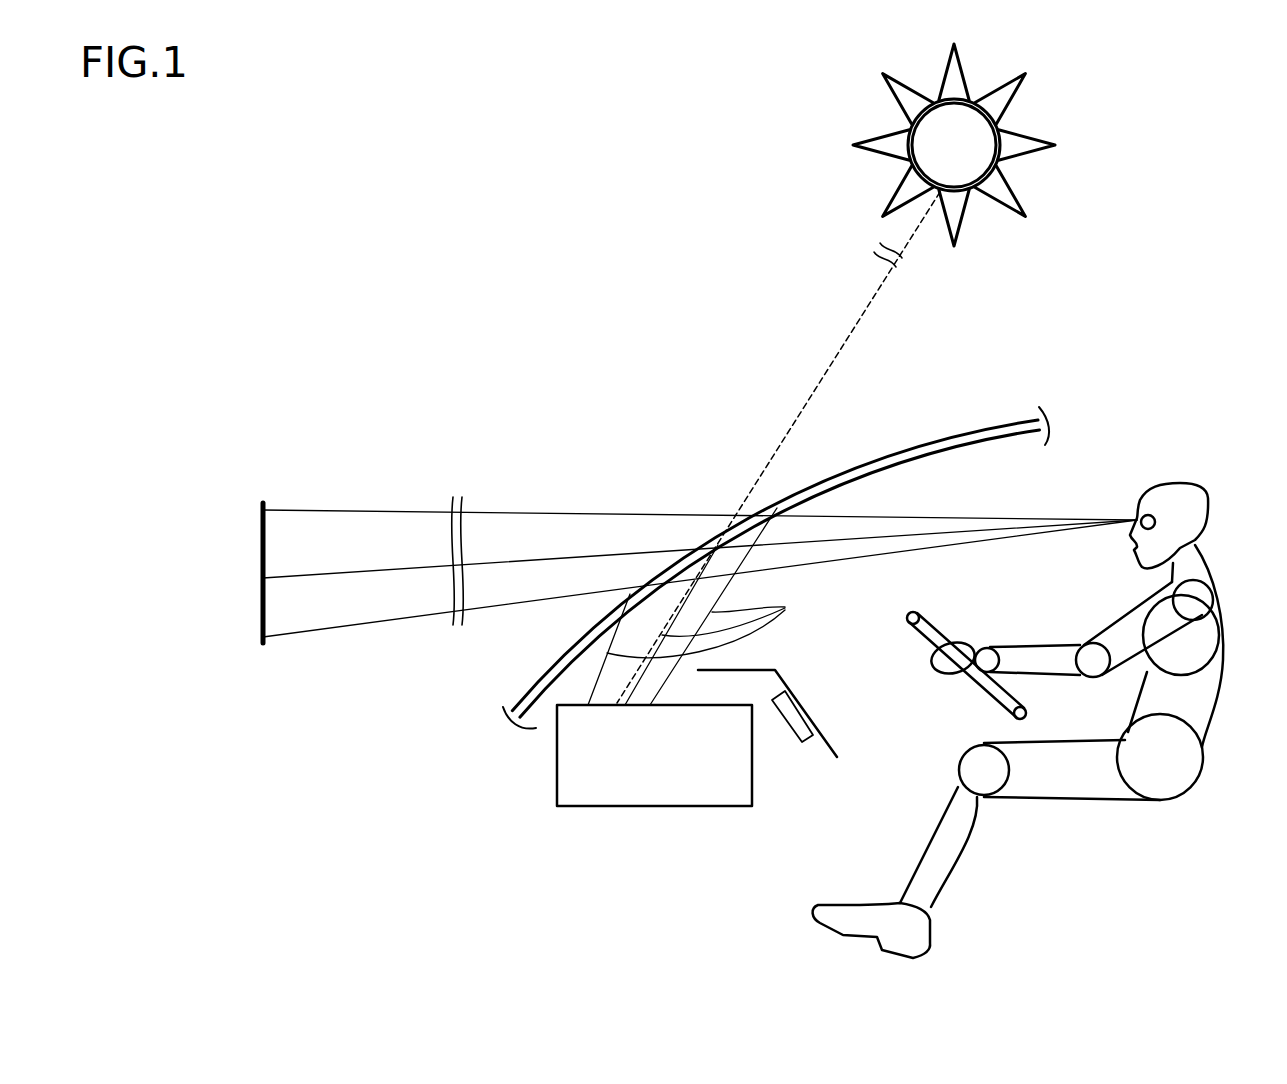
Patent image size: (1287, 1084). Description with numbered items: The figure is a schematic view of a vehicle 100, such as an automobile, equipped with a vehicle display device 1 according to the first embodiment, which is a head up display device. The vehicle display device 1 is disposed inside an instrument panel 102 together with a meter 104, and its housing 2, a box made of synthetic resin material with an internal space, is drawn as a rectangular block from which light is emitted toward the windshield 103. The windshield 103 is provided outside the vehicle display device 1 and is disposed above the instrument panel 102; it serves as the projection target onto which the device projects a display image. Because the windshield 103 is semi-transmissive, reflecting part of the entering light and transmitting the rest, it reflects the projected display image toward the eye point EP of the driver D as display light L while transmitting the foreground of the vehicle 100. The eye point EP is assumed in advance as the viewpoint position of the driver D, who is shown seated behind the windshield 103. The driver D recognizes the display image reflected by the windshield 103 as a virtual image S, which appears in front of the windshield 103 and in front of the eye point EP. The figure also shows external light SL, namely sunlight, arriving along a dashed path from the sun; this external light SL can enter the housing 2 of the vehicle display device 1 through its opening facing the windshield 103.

The vehicle 100 is at (518, 348).
The vehicle display device 1 is at (612, 830).
The housing 2 is at (557, 768).
The instrument panel 102 is at (828, 740).
The windshield 103 is at (930, 458).
The meter 104 is at (782, 722).
The virtual image S is at (268, 537).
The external light SL is at (818, 382).
The display light L is at (705, 629).
The eye point EP is at (1136, 512).
The driver D is at (1188, 485).